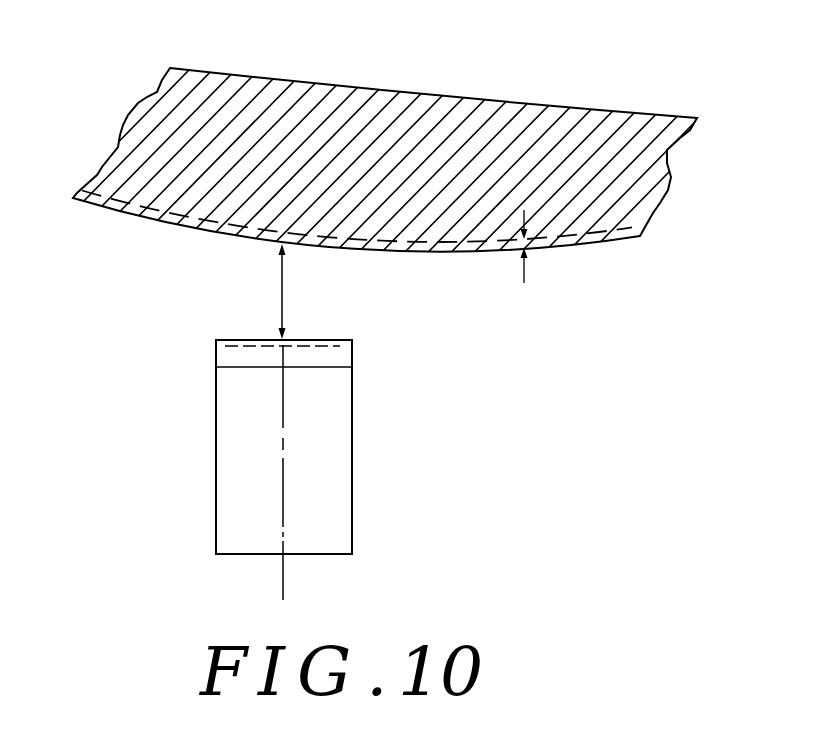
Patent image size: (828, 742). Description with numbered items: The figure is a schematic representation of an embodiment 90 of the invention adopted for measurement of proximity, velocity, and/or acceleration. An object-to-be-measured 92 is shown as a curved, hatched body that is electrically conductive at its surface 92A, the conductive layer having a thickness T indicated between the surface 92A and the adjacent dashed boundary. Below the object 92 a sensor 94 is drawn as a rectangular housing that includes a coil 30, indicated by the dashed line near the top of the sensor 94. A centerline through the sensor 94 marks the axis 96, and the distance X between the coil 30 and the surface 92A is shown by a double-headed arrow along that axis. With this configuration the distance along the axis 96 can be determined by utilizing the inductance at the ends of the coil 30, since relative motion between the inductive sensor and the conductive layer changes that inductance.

The object-to-be-measured 92 is at (447, 106).
The surface 92A is at (608, 241).
The thickness T is at (524, 276).
The distance X is at (280, 292).
The coil 30 is at (338, 346).
The sensor 94 is at (353, 460).
The axis 96 is at (283, 581).
The embodiment 90 is at (161, 403).